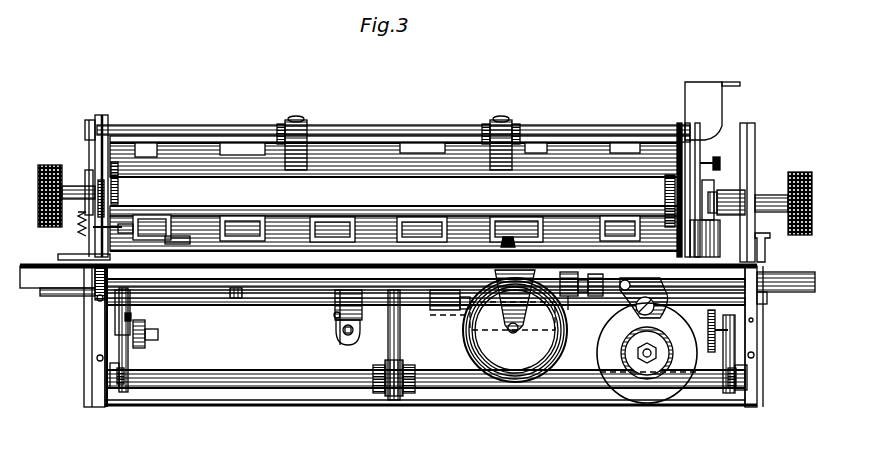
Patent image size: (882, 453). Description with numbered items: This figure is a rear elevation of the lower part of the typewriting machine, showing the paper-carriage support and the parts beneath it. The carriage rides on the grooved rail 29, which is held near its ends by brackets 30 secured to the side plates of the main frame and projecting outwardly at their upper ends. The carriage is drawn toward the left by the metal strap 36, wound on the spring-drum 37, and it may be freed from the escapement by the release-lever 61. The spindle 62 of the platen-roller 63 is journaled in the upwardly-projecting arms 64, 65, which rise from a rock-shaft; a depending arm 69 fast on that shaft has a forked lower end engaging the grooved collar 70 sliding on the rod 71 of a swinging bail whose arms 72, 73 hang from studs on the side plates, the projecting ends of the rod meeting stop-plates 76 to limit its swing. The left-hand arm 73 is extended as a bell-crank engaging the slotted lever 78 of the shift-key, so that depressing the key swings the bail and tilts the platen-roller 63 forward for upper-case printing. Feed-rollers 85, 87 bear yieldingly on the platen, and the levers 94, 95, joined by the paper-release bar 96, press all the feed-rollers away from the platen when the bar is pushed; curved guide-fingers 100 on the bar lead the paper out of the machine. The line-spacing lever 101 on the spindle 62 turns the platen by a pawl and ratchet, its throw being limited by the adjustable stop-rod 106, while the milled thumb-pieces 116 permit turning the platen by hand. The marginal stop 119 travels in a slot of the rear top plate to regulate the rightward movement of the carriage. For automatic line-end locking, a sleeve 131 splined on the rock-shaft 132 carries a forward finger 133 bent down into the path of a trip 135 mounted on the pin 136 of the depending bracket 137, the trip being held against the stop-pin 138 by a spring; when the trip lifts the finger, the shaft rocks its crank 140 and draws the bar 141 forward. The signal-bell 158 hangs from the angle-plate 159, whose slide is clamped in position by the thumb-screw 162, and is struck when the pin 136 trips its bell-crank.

The grooved bar or rail 29 is at (68, 272).
The bracket 30 is at (92, 352).
The metal strap 36 is at (283, 300).
The spring-drum 37 is at (632, 390).
The release-lever 61 is at (768, 254).
The spindle 62 is at (765, 205).
The platen-roller 63 is at (395, 170).
The arm 64 is at (125, 205).
The arm 65 is at (665, 188).
The arm 69 is at (400, 340).
The circumferentially-grooved collar 70 is at (382, 395).
The rod 71 is at (330, 385).
The arm 72 is at (129, 357).
The supporting-arm 73 is at (728, 360).
The stop-plate 76 is at (108, 380).
The lever of the shift-key 78 is at (708, 326).
The feed-roller 85 is at (333, 225).
The feed-roller 87 is at (233, 148).
The lever 94 is at (695, 145).
The lever 95 is at (95, 148).
The paper-release bar 96 is at (418, 150).
The curved guide-finger 100 is at (296, 170).
The lever 101 is at (712, 111).
The stop-rod 106 is at (720, 160).
The milled thumb-piece 116 is at (816, 176).
The marginal stop 119 is at (180, 228).
The sleeve 131 is at (605, 315).
The rock-shaft 132 is at (263, 283).
The finger 133 is at (568, 300).
The trip 135 is at (340, 338).
The rod or pin 136 is at (352, 333).
The depending bracket 137 is at (336, 323).
The pin 138 is at (336, 314).
The depending arm or crank 140 is at (120, 322).
The bar or plate 141 is at (150, 329).
The signal-bell 158 is at (515, 330).
The angle-plate 159 is at (513, 320).
The thumb-screw 162 is at (510, 233).